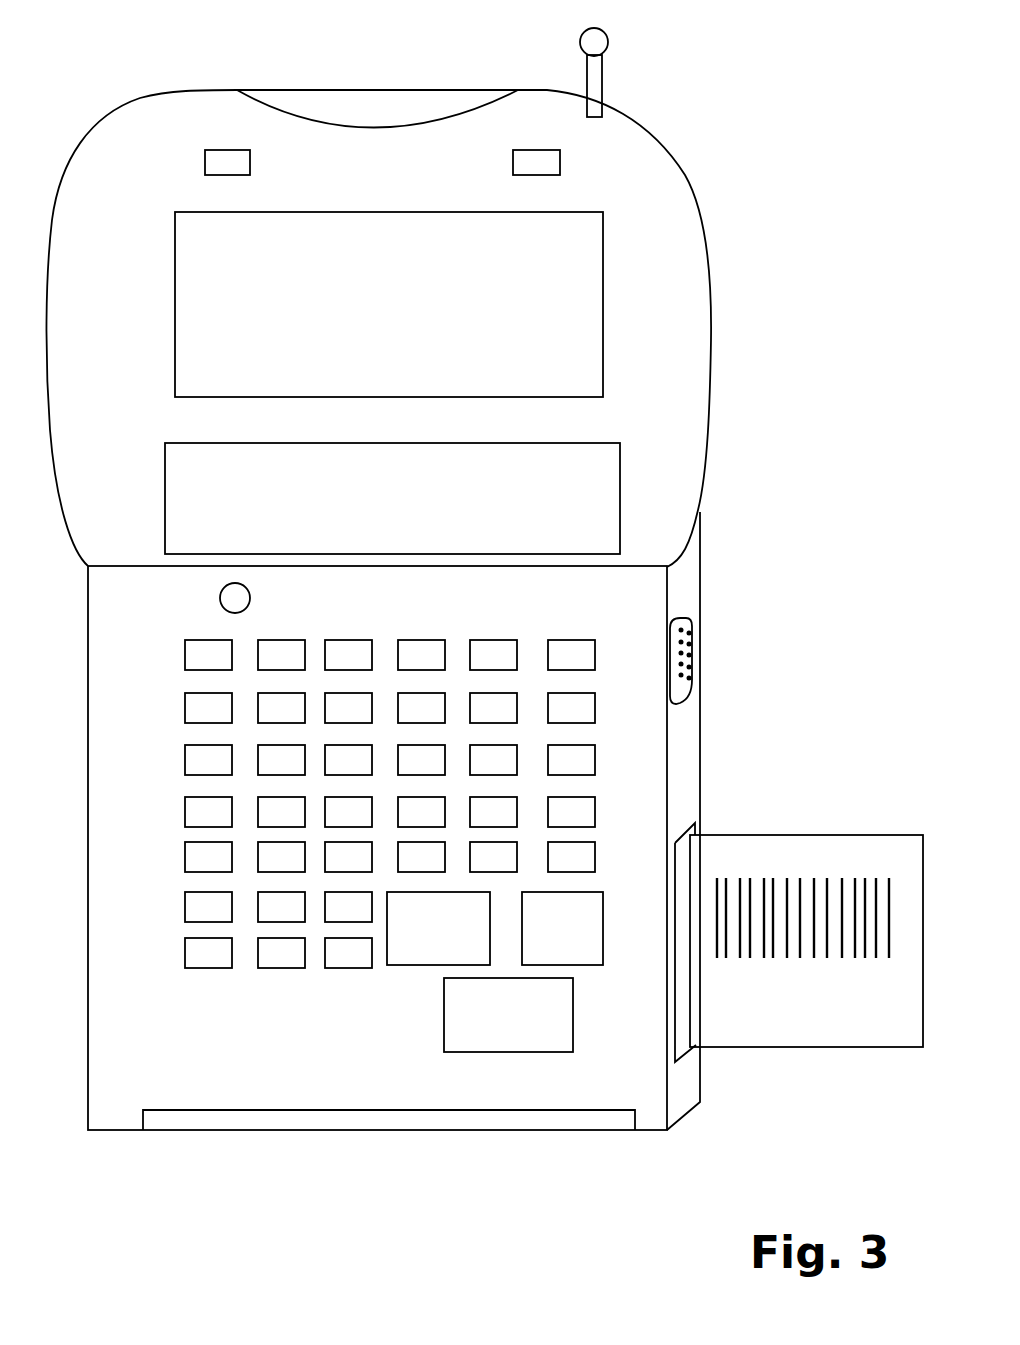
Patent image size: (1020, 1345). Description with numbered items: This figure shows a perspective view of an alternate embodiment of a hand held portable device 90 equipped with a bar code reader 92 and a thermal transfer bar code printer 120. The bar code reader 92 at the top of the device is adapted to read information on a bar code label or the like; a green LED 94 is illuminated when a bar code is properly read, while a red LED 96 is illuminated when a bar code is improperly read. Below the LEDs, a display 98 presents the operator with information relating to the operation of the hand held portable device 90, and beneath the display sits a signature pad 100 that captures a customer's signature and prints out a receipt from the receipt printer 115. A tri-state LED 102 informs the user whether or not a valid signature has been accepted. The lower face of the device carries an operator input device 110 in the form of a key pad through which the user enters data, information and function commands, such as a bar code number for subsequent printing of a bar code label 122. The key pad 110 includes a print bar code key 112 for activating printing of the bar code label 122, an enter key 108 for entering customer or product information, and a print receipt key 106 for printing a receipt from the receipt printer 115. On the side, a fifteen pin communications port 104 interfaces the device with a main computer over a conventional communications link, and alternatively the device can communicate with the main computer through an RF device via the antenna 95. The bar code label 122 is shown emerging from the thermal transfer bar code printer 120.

The hand held portable device 90 is at (690, 79).
The bar code reader 92 is at (383, 100).
The green LED 94 is at (210, 155).
The antenna 95 is at (598, 40).
The red LED 96 is at (552, 157).
The display 98 is at (555, 233).
The signature pad 100 is at (582, 462).
The tri-state LED 102 is at (228, 603).
The fifteen pin communications port 104 is at (690, 640).
The print receipt key 106 is at (398, 958).
The enter key 108 is at (580, 955).
The operator input device 110 is at (585, 610).
The print bar code key 112 is at (530, 1040).
The receipt printer 115 is at (592, 1150).
The thermal transfer bar code printer 120 is at (720, 1066).
The bar code label 122 is at (752, 840).